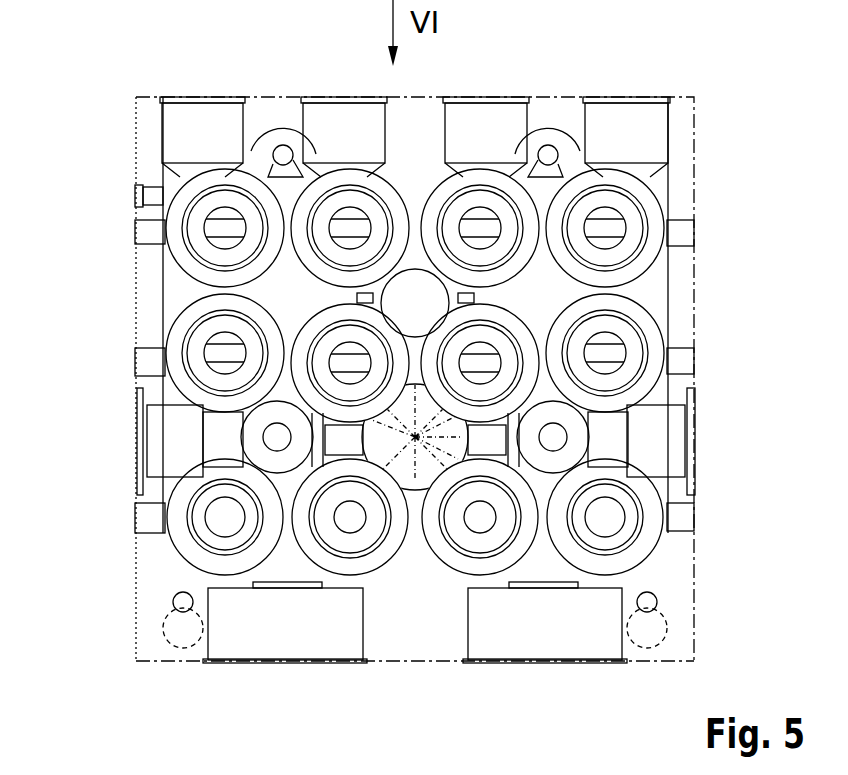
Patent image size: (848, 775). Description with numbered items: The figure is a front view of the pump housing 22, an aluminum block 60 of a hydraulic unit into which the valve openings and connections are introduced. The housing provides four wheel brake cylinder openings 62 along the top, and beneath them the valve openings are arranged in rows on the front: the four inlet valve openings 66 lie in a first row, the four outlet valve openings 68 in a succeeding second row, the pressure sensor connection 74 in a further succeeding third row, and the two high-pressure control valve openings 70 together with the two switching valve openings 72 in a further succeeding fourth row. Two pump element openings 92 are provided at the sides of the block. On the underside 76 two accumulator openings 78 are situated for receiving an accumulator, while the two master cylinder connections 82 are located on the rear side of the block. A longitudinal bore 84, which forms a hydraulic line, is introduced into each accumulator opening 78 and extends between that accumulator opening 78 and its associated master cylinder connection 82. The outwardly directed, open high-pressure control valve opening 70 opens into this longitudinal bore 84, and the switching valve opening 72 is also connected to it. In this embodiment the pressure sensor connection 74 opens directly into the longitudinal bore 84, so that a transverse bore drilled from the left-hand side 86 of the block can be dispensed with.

The pump housing 22 is at (98, 97).
The hydraulic block 60 is at (688, 90).
The wheel brake cylinder openings 62 is at (193, 97).
The inlet valve openings 66 is at (332, 238).
The outlet valve openings 68 is at (335, 368).
The high-pressure control valve openings 70 is at (215, 526).
The switching valve openings 72 is at (463, 533).
The pressure sensor connection 74 is at (272, 445).
The underside 76 is at (651, 668).
The accumulator openings 78 is at (292, 648).
The master cylinder connections 82 is at (278, 142).
The longitudinal bore 84 is at (285, 560).
The left-hand side 86 is at (134, 620).
The pump element openings 92 is at (152, 445).